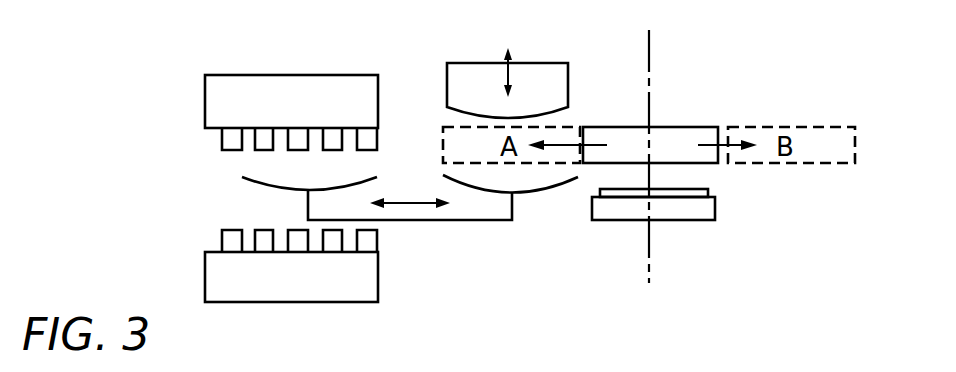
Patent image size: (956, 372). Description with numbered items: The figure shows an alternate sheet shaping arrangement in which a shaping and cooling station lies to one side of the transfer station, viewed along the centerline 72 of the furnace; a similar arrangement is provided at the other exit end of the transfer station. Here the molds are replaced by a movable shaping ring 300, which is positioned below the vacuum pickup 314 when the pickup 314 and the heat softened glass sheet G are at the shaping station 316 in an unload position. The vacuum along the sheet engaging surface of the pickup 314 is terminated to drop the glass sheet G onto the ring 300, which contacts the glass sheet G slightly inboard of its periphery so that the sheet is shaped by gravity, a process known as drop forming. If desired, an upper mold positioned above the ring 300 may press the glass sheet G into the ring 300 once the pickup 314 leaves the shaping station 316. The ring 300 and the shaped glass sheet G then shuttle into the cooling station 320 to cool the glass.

The cooling station 320 is at (313, 36).
The shaping station 316 is at (534, 37).
The vacuum pickup 314 is at (673, 127).
The movable shaping ring 300 is at (258, 185).
The centerline 72 is at (648, 267).
The glass sheet G is at (663, 190).